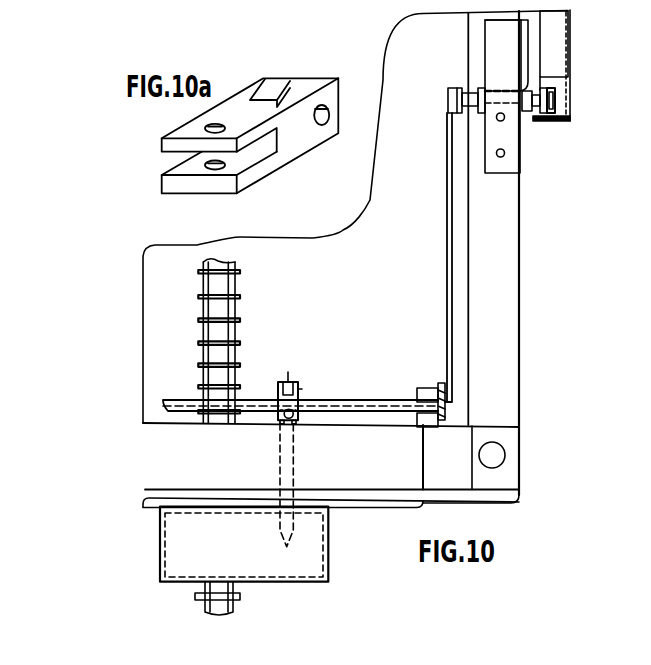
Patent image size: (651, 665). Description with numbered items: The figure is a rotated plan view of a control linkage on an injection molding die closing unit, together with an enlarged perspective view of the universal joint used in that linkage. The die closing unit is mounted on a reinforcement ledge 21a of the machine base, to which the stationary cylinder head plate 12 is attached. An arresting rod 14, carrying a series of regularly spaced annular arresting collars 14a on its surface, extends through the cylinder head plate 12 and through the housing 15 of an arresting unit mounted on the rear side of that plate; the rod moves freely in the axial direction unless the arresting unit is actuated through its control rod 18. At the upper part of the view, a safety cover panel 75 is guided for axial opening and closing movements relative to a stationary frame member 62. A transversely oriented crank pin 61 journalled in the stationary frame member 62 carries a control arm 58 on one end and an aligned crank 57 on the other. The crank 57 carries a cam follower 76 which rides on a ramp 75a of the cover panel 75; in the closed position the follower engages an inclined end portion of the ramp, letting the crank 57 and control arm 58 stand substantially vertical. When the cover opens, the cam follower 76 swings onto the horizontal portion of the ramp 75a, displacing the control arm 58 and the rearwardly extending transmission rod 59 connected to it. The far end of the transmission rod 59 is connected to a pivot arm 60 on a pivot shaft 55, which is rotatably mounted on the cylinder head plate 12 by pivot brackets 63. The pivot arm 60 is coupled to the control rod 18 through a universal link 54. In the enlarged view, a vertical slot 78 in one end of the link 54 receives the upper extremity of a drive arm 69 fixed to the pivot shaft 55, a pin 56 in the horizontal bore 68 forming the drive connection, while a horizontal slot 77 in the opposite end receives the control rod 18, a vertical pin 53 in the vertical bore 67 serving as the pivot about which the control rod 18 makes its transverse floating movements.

In FIG. 10, the stationary cylinder head plate 12 is at (150, 493).
In FIG. 10, the arresting rod 14 is at (227, 283).
In FIG. 10, the annular arresting collars 14a is at (200, 318).
In FIG. 10, the housing 15 is at (310, 543).
In FIG. 10, the control rod 18 is at (283, 448).
In FIG. 10, the reinforcement ledge 21a is at (503, 273).
In FIG. 10, the vertical pin 53 is at (295, 425).
In FIG. 10A, the universal link 54 is at (243, 82).
In FIG. 10, the universal link 54 is at (304, 392).
In FIG. 10, the pivot shaft 55 is at (258, 402).
In FIG. 10, the pin 56 is at (301, 389).
In FIG. 10, the crank 57 is at (557, 98).
In FIG. 10, the control arm 58 is at (458, 88).
In FIG. 10, the transmission rod 59 is at (448, 173).
In FIG. 10, the pivot arm 60 is at (440, 378).
In FIG. 10, the crank pin 61 is at (465, 110).
In FIG. 10, the stationary frame member 62 is at (527, 42).
In FIG. 10, the pivot brackets 63 is at (427, 393).
In FIG. 10A, the vertical bore 67 is at (208, 130).
In FIG. 10A, the horizontal bore 68 is at (322, 121).
In FIG. 10, the drive arm 69 is at (289, 382).
In FIG. 10, the cover panel 75 is at (570, 43).
In FIG. 10, the ramp 75a is at (560, 90).
In FIG. 10, the cam follower 76 is at (547, 121).
In FIG. 10A, the horizontal slot 77 is at (245, 160).
In FIG. 10A, the vertical slot 78 is at (281, 92).